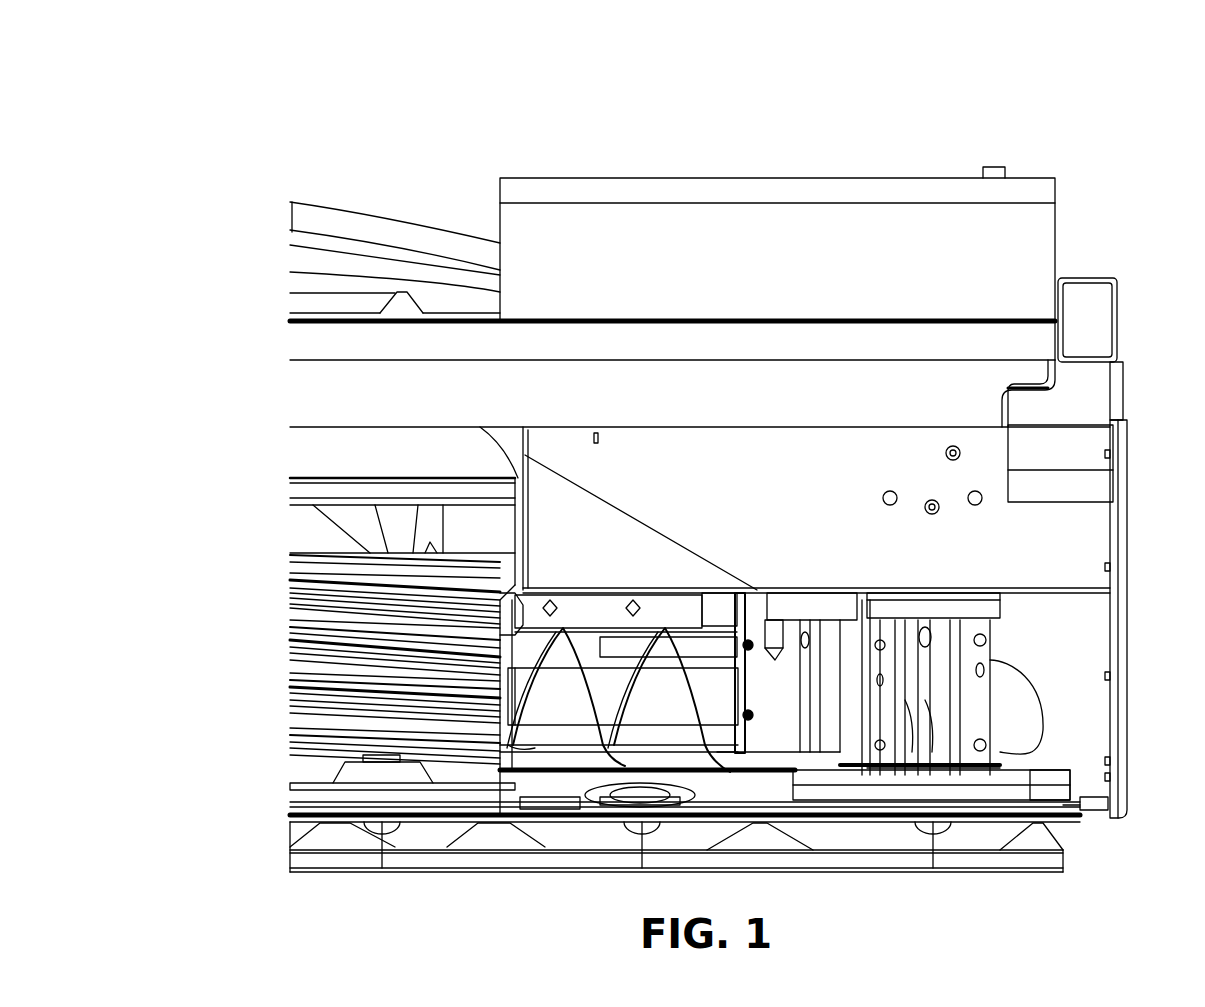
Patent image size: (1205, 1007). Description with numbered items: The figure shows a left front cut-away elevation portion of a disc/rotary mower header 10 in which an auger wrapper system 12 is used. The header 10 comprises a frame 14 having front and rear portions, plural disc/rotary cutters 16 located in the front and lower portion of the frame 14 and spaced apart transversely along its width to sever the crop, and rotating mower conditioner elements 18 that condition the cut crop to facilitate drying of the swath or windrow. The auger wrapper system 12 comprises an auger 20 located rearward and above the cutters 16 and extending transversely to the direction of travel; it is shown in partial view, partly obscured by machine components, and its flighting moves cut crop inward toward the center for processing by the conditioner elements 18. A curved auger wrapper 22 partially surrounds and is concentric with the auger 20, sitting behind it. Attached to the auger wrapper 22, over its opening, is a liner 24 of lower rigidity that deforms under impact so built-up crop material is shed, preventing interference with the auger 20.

The disc/rotary mower header 10 is at (273, 140).
The auger wrapper system 12 is at (555, 745).
The frame 14 is at (1123, 683).
The disc/rotary cutters 16 is at (697, 780).
The rotating mower conditioner elements 18 is at (277, 657).
The auger 20 is at (713, 700).
The auger wrapper 22 is at (580, 748).
The liner 24 is at (713, 652).